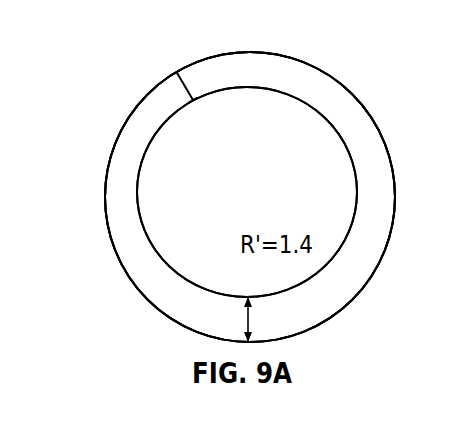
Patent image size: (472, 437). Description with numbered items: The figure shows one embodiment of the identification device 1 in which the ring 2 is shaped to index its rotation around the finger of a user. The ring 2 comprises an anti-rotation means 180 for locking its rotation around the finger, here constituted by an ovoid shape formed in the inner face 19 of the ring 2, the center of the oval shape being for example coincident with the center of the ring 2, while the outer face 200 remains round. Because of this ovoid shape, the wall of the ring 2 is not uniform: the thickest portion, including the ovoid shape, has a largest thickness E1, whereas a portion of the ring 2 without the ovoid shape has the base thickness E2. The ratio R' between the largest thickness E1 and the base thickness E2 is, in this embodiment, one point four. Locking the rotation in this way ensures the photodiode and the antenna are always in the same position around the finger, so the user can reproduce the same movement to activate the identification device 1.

The identification device 1 is at (124, 88).
The ring 2 is at (327, 97).
The inner face 19 is at (350, 239).
The anti-rotation means 180 is at (207, 275).
The outer face 200 is at (148, 306).
The largest thickness E1 is at (248, 318).
The base thickness E2 is at (210, 76).